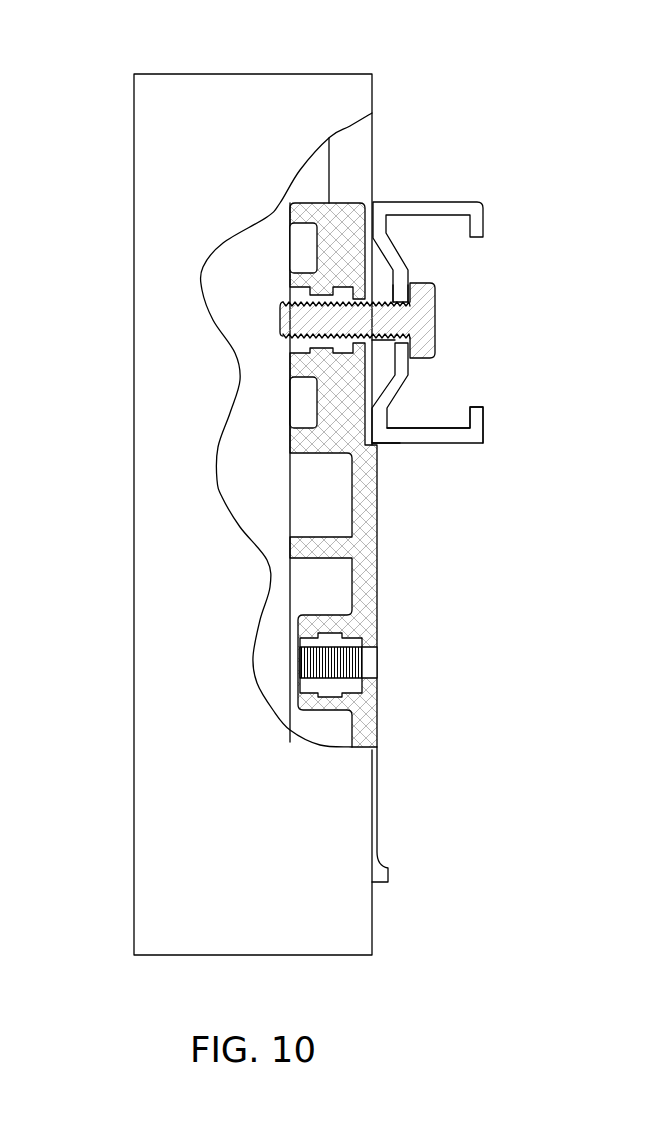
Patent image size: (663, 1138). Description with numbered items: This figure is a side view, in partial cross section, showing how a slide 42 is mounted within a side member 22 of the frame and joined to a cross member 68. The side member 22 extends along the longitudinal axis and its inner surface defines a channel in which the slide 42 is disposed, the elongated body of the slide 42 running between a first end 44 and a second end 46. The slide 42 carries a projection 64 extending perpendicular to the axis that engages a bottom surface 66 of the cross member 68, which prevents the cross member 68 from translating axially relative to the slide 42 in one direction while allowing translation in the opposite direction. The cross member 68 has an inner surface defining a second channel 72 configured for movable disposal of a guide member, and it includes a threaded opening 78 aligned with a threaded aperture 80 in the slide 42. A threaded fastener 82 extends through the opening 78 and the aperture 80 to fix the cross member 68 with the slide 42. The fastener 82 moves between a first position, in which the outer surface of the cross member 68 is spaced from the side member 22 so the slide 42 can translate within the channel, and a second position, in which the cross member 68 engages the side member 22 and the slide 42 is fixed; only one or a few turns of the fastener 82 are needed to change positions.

The side member 22 is at (157, 713).
The slide 42 is at (366, 547).
The first end 44 is at (320, 212).
The second end 46 is at (380, 884).
The projection 64 is at (380, 447).
The bottom surface 66 is at (463, 444).
The cross member 68 is at (398, 262).
The second channel 72 is at (440, 400).
The threaded opening 78 is at (410, 285).
The threaded aperture 80 is at (392, 349).
The threaded fastener 82 is at (436, 320).